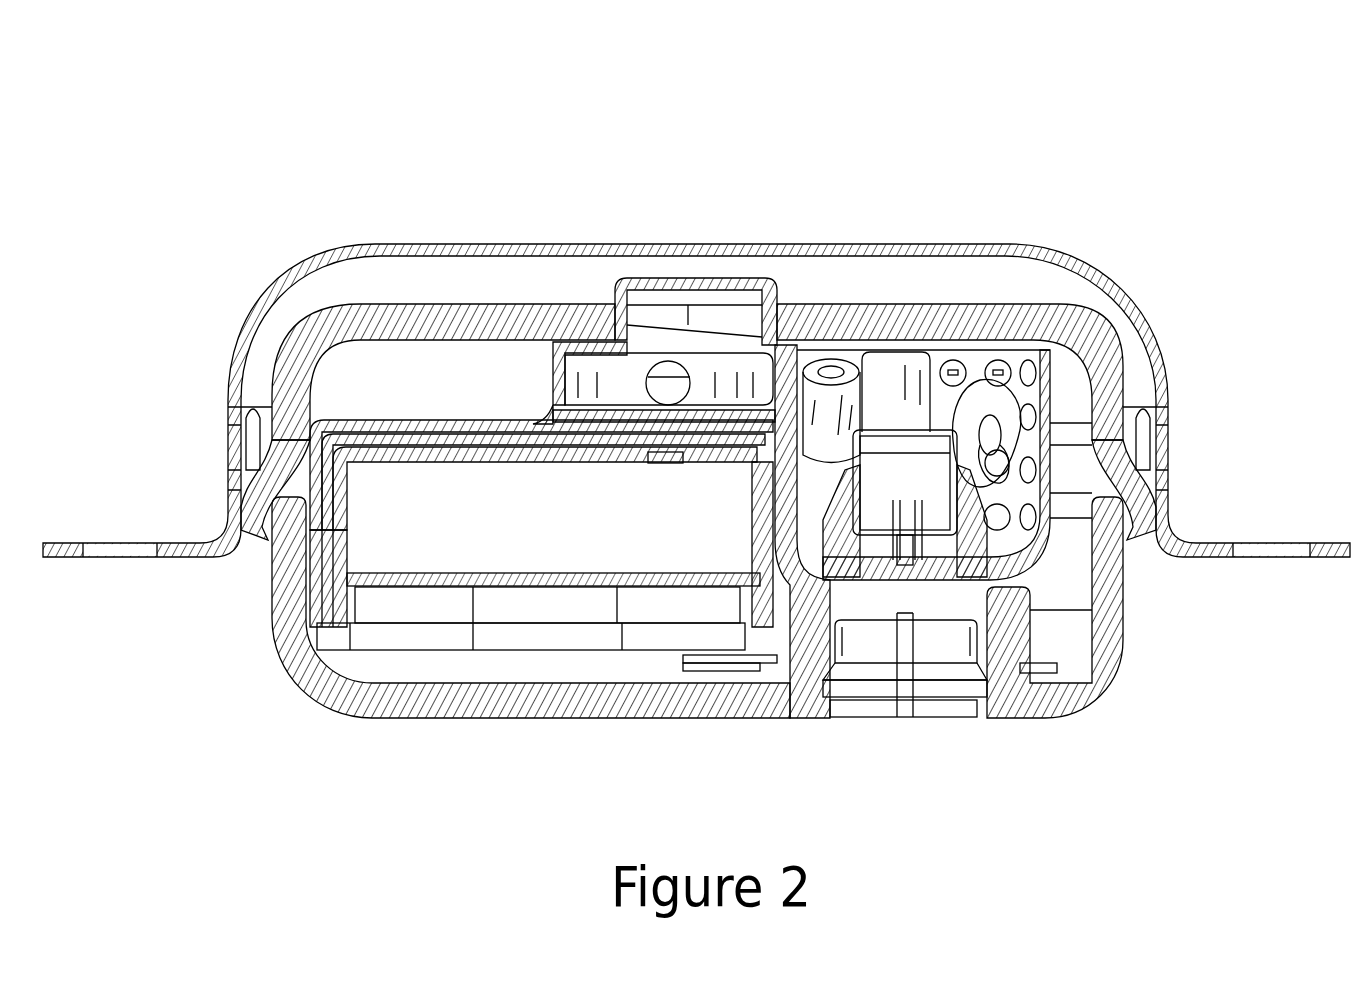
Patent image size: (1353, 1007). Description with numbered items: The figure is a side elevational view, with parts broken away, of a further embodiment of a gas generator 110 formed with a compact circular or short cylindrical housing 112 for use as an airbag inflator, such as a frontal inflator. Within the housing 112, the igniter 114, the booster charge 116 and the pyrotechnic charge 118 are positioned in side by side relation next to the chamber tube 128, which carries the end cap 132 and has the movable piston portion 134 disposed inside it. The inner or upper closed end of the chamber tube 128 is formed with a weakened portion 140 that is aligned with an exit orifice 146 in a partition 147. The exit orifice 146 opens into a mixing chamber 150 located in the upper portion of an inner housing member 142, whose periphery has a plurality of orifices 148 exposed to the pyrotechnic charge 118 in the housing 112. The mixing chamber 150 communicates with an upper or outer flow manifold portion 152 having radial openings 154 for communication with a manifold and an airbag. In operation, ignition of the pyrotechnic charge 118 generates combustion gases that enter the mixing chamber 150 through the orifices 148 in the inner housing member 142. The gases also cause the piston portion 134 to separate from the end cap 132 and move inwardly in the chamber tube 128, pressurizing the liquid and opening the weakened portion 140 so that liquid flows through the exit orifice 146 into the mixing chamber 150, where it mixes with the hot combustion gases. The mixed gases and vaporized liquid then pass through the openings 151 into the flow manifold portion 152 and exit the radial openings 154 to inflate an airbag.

The gas generator 110 is at (950, 133).
The housing 112 is at (456, 700).
The igniter 114 is at (933, 687).
The booster charge 116 is at (893, 372).
The pyrotechnic charge 118 is at (1073, 580).
The chamber tube 128 is at (330, 595).
The end cap 132 is at (400, 640).
The piston portion 134 is at (458, 577).
The weakened portion 140 is at (668, 463).
The inner housing member 142 is at (600, 330).
The exit orifice 146 is at (667, 415).
The partition 147 is at (553, 418).
The orifices 148 is at (553, 373).
The mixing chamber 150 is at (725, 375).
The openings 151 is at (698, 283).
The flow manifold portion 152 is at (698, 280).
The radial openings 154 is at (237, 440).